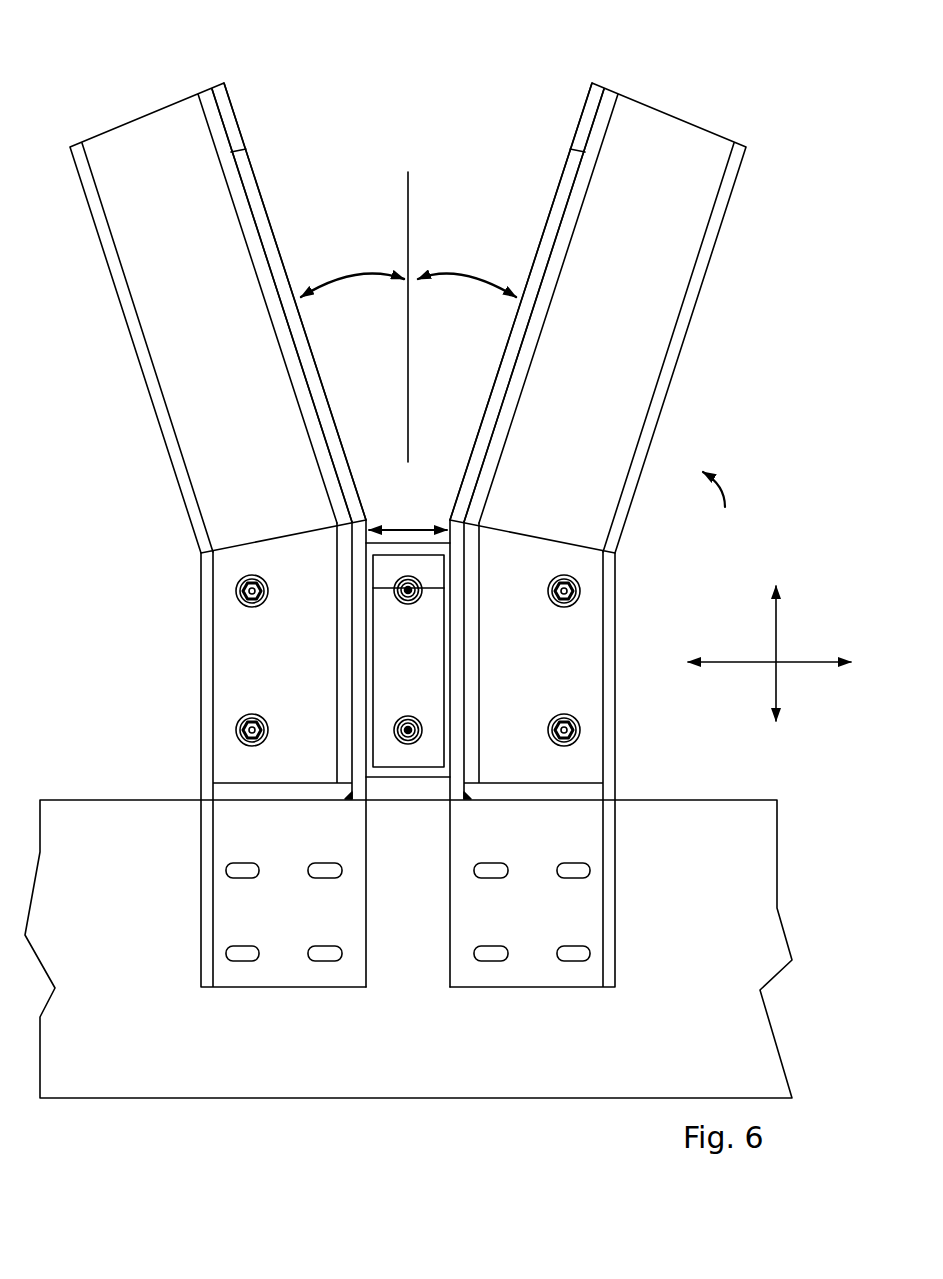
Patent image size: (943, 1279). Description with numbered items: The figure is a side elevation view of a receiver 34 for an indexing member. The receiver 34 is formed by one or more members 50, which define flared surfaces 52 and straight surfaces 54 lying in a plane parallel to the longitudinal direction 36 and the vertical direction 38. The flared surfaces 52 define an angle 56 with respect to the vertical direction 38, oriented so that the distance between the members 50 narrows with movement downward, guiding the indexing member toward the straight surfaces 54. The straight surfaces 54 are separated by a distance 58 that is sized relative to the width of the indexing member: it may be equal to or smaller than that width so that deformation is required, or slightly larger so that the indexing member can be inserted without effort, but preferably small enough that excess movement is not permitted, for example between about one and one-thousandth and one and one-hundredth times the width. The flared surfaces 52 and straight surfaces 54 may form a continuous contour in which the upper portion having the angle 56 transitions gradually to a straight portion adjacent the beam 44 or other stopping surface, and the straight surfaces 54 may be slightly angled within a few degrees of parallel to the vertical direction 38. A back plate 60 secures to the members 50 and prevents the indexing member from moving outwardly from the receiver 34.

The receiver 34 is at (720, 503).
The longitudinal direction 36 is at (730, 660).
The vertical direction 38 is at (776, 632).
The beam 44 is at (695, 898).
The members 50 is at (283, 509).
The flared surfaces 52 is at (282, 256).
The straight surfaces 54 is at (366, 646).
The angle 56 is at (333, 282).
The distance 58 is at (418, 527).
The back plate 60 is at (411, 708).